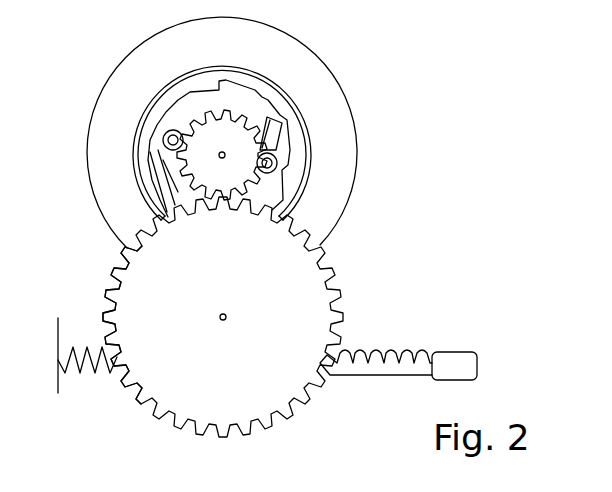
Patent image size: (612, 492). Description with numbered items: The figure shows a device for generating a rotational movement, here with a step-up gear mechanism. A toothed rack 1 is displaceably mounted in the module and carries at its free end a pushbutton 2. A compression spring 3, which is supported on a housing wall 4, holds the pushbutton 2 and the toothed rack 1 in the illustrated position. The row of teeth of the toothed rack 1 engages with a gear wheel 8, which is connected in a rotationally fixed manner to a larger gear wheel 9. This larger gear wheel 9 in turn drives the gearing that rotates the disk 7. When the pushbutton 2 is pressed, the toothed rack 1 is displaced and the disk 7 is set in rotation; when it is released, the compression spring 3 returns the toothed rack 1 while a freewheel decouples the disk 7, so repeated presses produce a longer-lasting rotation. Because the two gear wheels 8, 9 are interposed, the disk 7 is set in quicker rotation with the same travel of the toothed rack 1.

The toothed rack 1 is at (375, 350).
The pushbutton 2 is at (447, 360).
The compression spring 3 is at (102, 368).
The housing wall 4 is at (63, 378).
The disk 7 is at (328, 100).
The gear wheel 8 is at (320, 292).
The larger gear wheel 9 is at (112, 279).